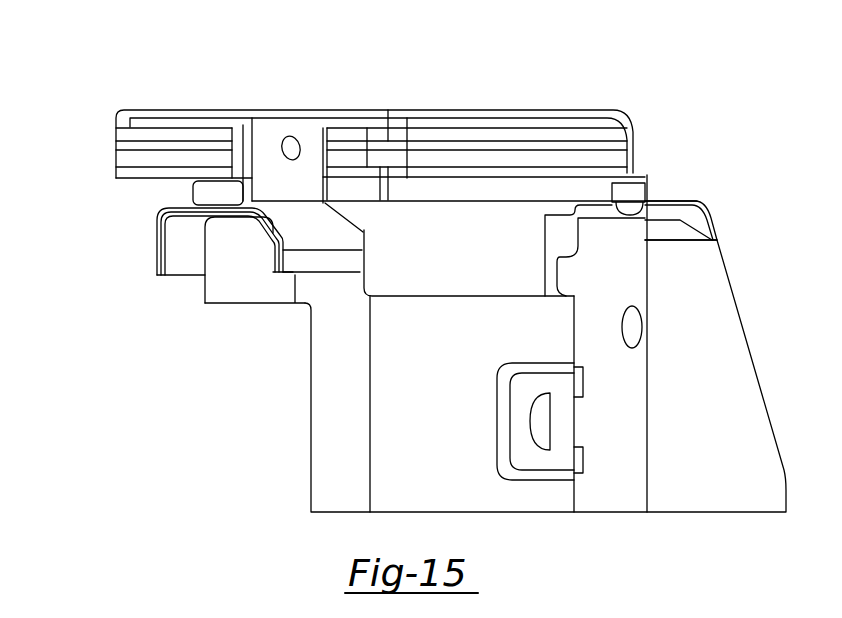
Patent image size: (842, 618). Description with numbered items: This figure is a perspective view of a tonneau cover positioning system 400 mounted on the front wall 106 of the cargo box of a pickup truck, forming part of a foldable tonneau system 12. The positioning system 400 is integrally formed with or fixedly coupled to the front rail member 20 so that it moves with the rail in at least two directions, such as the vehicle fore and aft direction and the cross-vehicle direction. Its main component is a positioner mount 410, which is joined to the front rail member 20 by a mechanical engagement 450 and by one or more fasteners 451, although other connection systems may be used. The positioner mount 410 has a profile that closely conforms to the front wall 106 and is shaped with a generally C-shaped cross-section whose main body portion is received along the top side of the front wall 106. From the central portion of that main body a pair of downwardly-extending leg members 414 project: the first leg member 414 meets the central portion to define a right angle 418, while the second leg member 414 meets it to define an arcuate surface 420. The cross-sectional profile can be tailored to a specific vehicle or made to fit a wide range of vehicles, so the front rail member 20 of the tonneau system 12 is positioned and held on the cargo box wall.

The front rail member 20 is at (118, 130).
The mechanical engagement 450 is at (297, 106).
The fastener 451 is at (283, 137).
The right angle 418 is at (158, 213).
The leg member 414 is at (157, 242).
The tonneau cover positioning system 400 is at (169, 296).
The positioner mount 410 is at (292, 274).
The arcuate surface 420 is at (342, 232).
The foldable tonneau system 12 is at (95, 283).
The front wall 106 is at (345, 459).